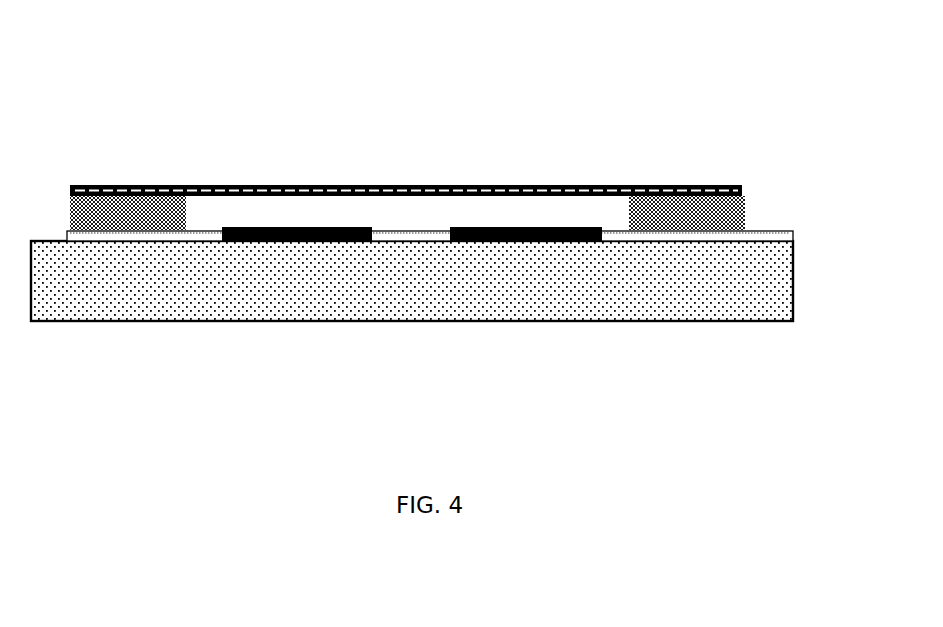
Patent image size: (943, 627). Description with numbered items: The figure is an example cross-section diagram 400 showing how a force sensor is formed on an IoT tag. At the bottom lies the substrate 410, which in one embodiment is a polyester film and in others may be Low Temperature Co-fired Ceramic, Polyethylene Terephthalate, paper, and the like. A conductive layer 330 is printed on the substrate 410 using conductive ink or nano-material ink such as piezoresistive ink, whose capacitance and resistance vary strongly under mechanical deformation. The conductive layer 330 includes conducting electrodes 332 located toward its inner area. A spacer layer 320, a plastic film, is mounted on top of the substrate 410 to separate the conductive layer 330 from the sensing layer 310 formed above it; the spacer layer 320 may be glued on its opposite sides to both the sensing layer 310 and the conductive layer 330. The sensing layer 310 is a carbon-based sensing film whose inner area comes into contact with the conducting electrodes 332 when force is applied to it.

The cross-section diagram 400 is at (528, 118).
The sensing layer 310 is at (260, 186).
The spacer layer 320 is at (130, 208).
The conductive layer 330 is at (771, 230).
The conducting electrodes 332 is at (468, 242).
The substrate 410 is at (775, 259).